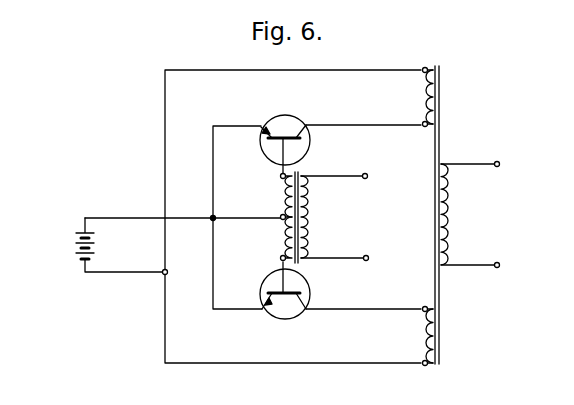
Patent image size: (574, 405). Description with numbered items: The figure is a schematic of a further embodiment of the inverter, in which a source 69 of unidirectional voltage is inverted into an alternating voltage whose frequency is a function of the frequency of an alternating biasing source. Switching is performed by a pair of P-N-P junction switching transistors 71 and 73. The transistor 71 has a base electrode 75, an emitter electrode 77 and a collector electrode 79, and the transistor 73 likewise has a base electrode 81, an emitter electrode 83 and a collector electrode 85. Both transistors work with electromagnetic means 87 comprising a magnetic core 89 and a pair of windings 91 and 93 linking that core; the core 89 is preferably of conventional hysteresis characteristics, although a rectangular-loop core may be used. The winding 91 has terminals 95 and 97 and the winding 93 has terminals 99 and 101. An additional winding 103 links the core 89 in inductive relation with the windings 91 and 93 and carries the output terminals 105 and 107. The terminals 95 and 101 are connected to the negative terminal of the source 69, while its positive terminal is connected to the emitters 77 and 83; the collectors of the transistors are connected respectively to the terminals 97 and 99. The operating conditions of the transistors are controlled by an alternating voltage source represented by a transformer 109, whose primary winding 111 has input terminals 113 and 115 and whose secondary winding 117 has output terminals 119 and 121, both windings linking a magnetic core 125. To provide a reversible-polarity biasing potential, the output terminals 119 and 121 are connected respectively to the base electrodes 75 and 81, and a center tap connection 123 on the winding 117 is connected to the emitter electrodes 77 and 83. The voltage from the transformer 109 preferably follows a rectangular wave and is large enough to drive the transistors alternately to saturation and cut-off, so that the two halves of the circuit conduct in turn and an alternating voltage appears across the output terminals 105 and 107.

The source of unidirectional voltage 69 is at (58, 257).
The switching transistor 71 is at (292, 133).
The switching transistor 73 is at (285, 299).
The base electrode 75 is at (272, 147).
The emitter electrode 77 is at (276, 128).
The collector electrode 79 is at (309, 135).
The base electrode 81 is at (270, 306).
The emitter electrode 83 is at (262, 303).
The collector electrode 85 is at (293, 306).
The electromagnetic means 87 is at (464, 216).
The magnetic core 89 is at (440, 128).
The winding 91 is at (422, 99).
The winding 93 is at (422, 332).
The terminal 95 is at (423, 67).
The terminal 97 is at (423, 127).
The terminal 99 is at (423, 306).
The terminal 101 is at (427, 373).
The additional winding 103 is at (448, 213).
The output terminal 105 is at (499, 162).
The output terminal 107 is at (499, 267).
The transformer 109 is at (325, 221).
The primary winding 111 is at (317, 195).
The input terminal 113 is at (368, 175).
The input terminal 115 is at (368, 259).
The secondary winding 117 is at (285, 201).
The output terminal 119 is at (280, 177).
The output terminal 121 is at (280, 260).
The center tap connection 123 is at (281, 219).
The magnetic core 125 is at (299, 264).